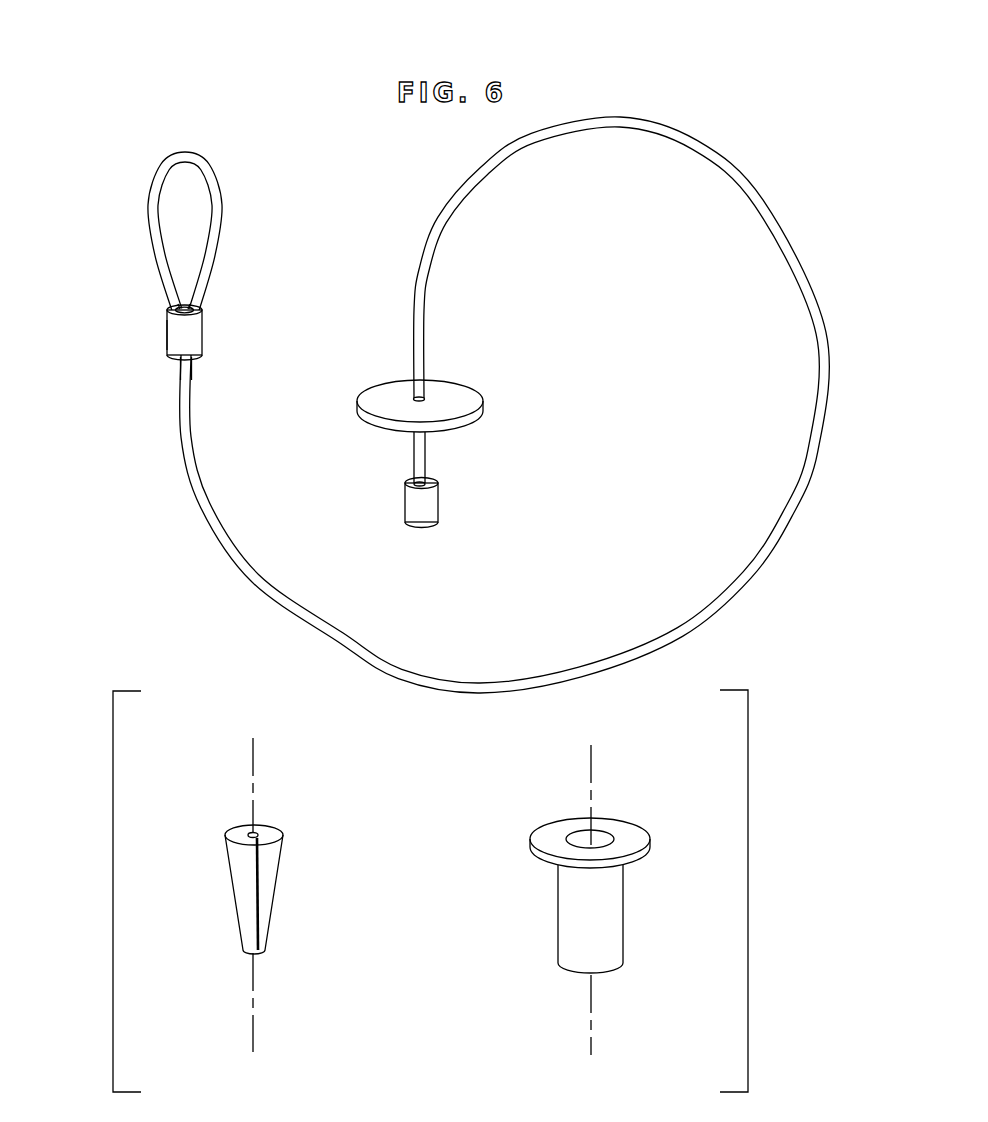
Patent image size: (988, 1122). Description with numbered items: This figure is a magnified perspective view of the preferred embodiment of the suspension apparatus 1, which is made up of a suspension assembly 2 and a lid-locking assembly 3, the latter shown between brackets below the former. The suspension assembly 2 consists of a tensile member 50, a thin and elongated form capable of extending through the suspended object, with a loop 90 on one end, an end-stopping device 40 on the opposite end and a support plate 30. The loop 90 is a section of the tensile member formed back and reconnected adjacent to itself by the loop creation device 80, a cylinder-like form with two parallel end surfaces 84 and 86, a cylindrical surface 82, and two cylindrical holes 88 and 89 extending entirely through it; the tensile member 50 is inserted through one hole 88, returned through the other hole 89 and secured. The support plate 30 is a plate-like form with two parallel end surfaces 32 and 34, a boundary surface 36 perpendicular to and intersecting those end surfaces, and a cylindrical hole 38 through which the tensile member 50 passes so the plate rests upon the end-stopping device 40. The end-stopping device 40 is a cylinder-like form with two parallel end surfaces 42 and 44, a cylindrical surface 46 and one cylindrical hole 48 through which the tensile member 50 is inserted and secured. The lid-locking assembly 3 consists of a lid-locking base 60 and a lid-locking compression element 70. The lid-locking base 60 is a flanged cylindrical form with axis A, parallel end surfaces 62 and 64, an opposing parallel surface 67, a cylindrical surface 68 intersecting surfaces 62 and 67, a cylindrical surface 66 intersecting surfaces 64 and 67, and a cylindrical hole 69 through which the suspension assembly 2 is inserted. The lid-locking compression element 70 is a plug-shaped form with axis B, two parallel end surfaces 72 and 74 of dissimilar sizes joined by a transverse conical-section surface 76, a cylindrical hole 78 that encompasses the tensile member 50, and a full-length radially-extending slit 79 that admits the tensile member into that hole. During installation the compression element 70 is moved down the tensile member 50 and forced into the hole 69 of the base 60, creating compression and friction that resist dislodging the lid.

The suspension apparatus 1 is at (827, 663).
The suspension assembly 2 is at (253, 63).
The lid-locking assembly 3 is at (450, 988).
The support plate 30 is at (441, 389).
The end surface 32 is at (460, 397).
The end surface 34 is at (455, 428).
The boundary surface 36 is at (400, 424).
The cylindrical hole 38 is at (415, 398).
The end-stopping device 40 is at (429, 501).
The end surface 42 is at (410, 482).
The end surface 44 is at (420, 530).
The cylindrical surface 46 is at (418, 507).
The cylindrical hole 48 is at (428, 482).
The tensile member 50 is at (200, 503).
The lid-locking base 60 is at (576, 896).
The end surface 62 is at (553, 836).
The end surface 64 is at (572, 970).
The cylindrical surface 66 is at (590, 912).
The parallel surface 67 is at (628, 868).
The cylindrical surface 68 is at (575, 866).
The cylindrical hole 69 is at (595, 838).
The lid-locking compression element 70 is at (245, 893).
The end surface 72 is at (245, 831).
The end surface 74 is at (250, 950).
The transverse conical-section surface 76 is at (245, 875).
The cylindrical hole 78 is at (257, 835).
The full-length radially-extending slit 79 is at (265, 887).
The loop creation device 80 is at (145, 354).
The cylindrical surface 82 is at (187, 338).
The end surface 84 is at (185, 323).
The end surface 86 is at (182, 370).
The cylindrical hole 88 is at (200, 309).
The cylindrical hole 89 is at (172, 333).
The loop 90 is at (152, 205).